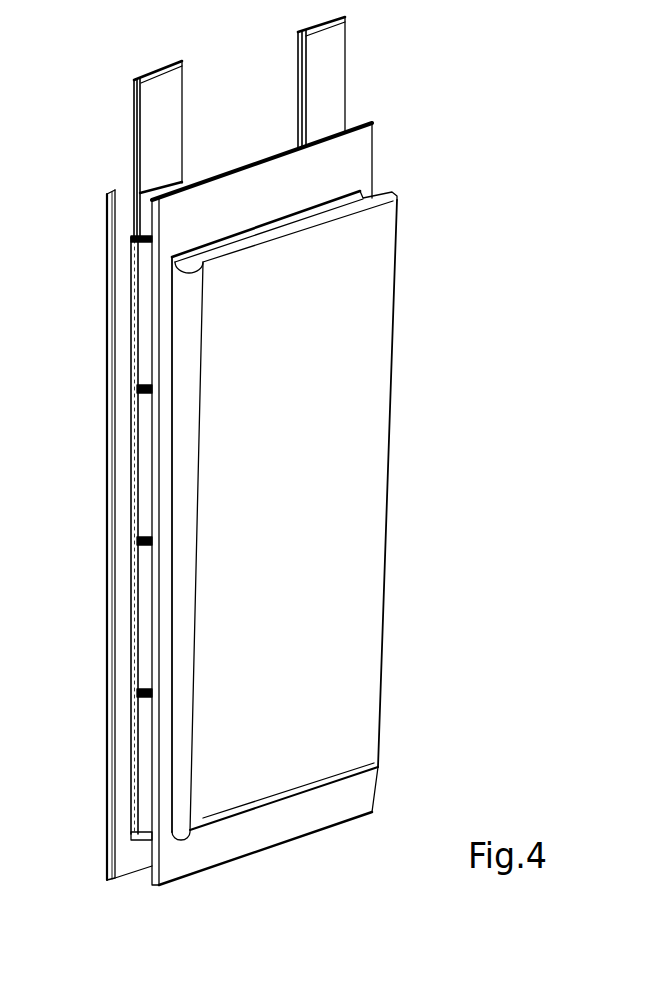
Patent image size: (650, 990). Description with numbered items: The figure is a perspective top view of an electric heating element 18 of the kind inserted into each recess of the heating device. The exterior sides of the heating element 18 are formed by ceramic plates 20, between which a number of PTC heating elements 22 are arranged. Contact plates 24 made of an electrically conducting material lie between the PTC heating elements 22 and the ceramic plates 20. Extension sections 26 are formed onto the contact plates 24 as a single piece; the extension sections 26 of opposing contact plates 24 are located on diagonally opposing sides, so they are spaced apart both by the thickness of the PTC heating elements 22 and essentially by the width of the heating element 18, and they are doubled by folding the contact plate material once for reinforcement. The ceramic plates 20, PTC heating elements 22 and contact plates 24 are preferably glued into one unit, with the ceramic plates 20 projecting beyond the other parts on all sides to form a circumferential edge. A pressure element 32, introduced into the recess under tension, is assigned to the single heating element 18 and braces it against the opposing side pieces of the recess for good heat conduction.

The heating element 18 is at (88, 493).
The ceramic plate 20 is at (112, 439).
The PTC heating element 22 is at (142, 360).
The contact plate 24 is at (130, 324).
The extension section 26 is at (298, 61).
The pressure element 32 is at (370, 546).